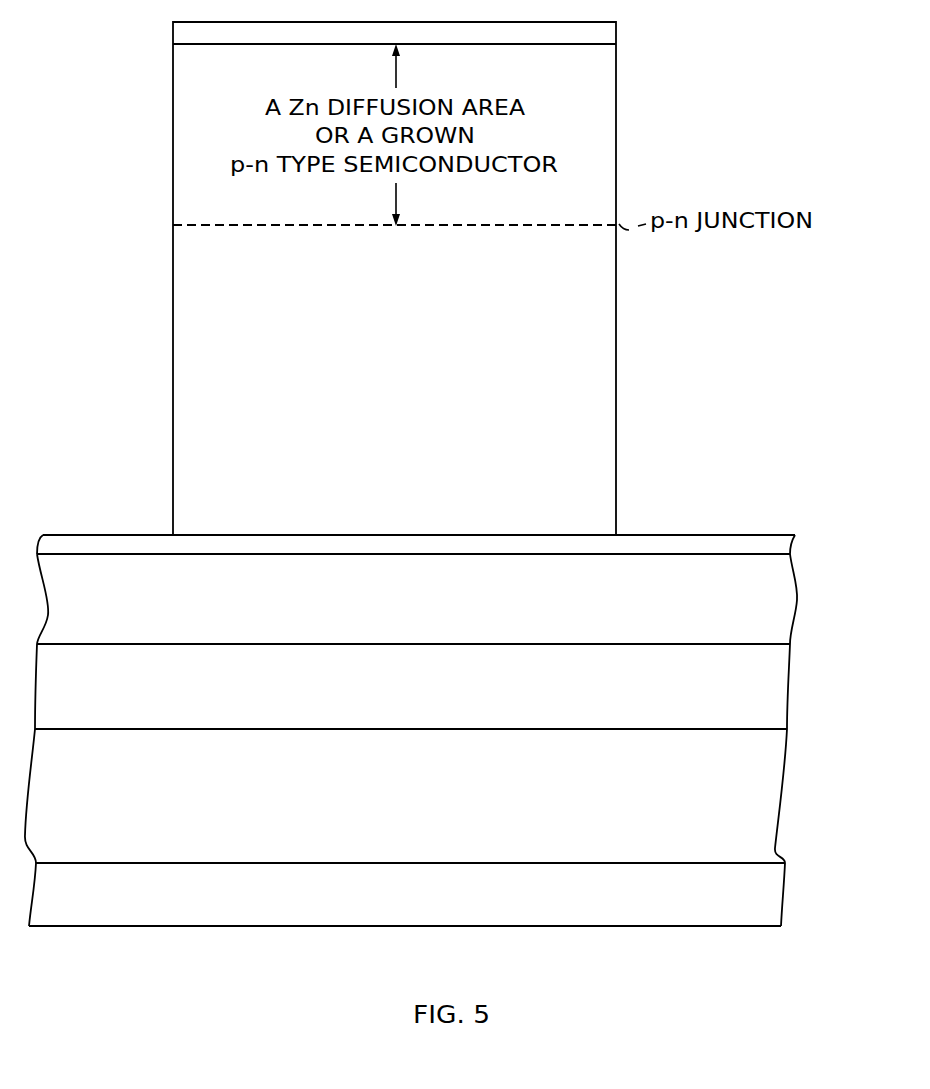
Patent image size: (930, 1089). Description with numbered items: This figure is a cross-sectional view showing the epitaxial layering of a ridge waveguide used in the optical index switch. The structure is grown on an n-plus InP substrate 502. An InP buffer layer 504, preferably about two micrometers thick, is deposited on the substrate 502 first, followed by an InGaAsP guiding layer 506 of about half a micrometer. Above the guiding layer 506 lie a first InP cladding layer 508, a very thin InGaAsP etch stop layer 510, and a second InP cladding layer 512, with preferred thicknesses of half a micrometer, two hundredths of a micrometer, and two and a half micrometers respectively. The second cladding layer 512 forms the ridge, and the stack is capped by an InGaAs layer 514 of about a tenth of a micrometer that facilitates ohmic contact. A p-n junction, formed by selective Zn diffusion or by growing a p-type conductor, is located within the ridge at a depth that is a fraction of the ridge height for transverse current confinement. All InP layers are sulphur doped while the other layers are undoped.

The substrate 502 is at (775, 906).
The buffer layer 504 is at (775, 771).
The guiding layer 506 is at (775, 681).
The first cladding layer 508 is at (775, 591).
The etch stop layer 510 is at (718, 535).
The second cladding layer 512 is at (617, 321).
The InGaAs layer 514 is at (617, 29).